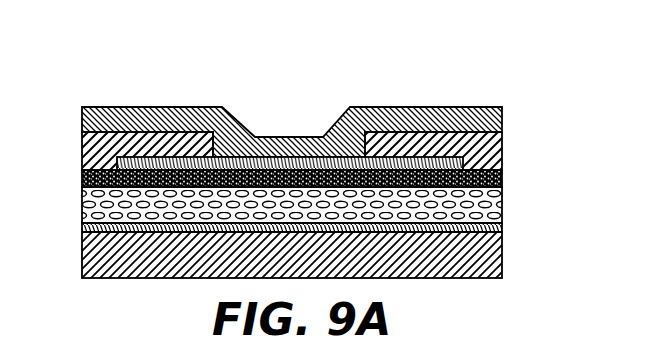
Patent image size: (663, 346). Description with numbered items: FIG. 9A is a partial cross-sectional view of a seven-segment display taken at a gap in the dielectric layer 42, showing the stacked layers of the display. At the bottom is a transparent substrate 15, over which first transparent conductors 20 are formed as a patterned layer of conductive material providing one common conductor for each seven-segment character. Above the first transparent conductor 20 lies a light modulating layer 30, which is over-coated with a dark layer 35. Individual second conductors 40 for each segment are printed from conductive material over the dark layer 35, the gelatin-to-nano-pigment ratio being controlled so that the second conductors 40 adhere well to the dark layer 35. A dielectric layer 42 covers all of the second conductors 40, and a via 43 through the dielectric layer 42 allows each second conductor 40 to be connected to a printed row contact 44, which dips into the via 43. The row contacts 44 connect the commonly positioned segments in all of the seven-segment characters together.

The transparent substrate 15 is at (502, 256).
The first transparent conductor 20 is at (502, 228).
The light modulating layer 30 is at (502, 205).
The dark layer 35 is at (502, 178).
The second conductor 40 is at (502, 136).
The dielectric layer 42 is at (502, 160).
The via 43 is at (233, 105).
The row contact 44 is at (502, 114).